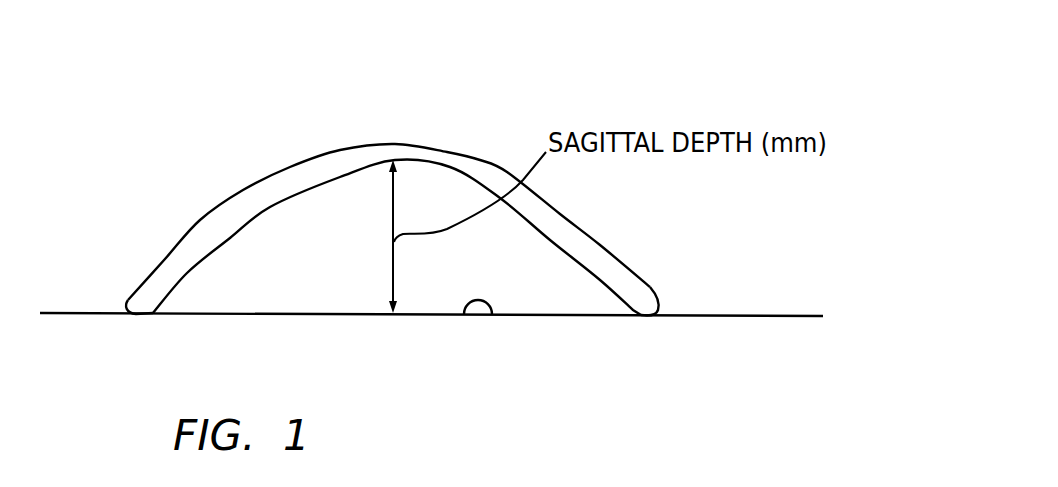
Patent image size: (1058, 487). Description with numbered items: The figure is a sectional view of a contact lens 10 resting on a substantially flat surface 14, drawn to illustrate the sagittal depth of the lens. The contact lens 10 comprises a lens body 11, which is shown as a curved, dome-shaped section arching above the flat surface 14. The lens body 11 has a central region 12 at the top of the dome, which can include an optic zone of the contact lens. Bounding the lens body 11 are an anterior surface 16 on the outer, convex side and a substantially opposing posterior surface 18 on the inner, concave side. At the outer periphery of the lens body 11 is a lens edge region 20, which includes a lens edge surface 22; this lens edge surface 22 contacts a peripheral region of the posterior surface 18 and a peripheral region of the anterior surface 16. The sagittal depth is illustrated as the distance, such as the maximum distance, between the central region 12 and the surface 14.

The contact lens 10 is at (444, 170).
The lens body 11 is at (480, 166).
The central region 12 is at (388, 161).
The substantially flat surface 14 is at (489, 306).
The anterior surface 16 is at (242, 190).
The posterior surface 18 is at (230, 238).
The lens edge region 20 is at (665, 290).
The lens edge surface 22 is at (662, 315).